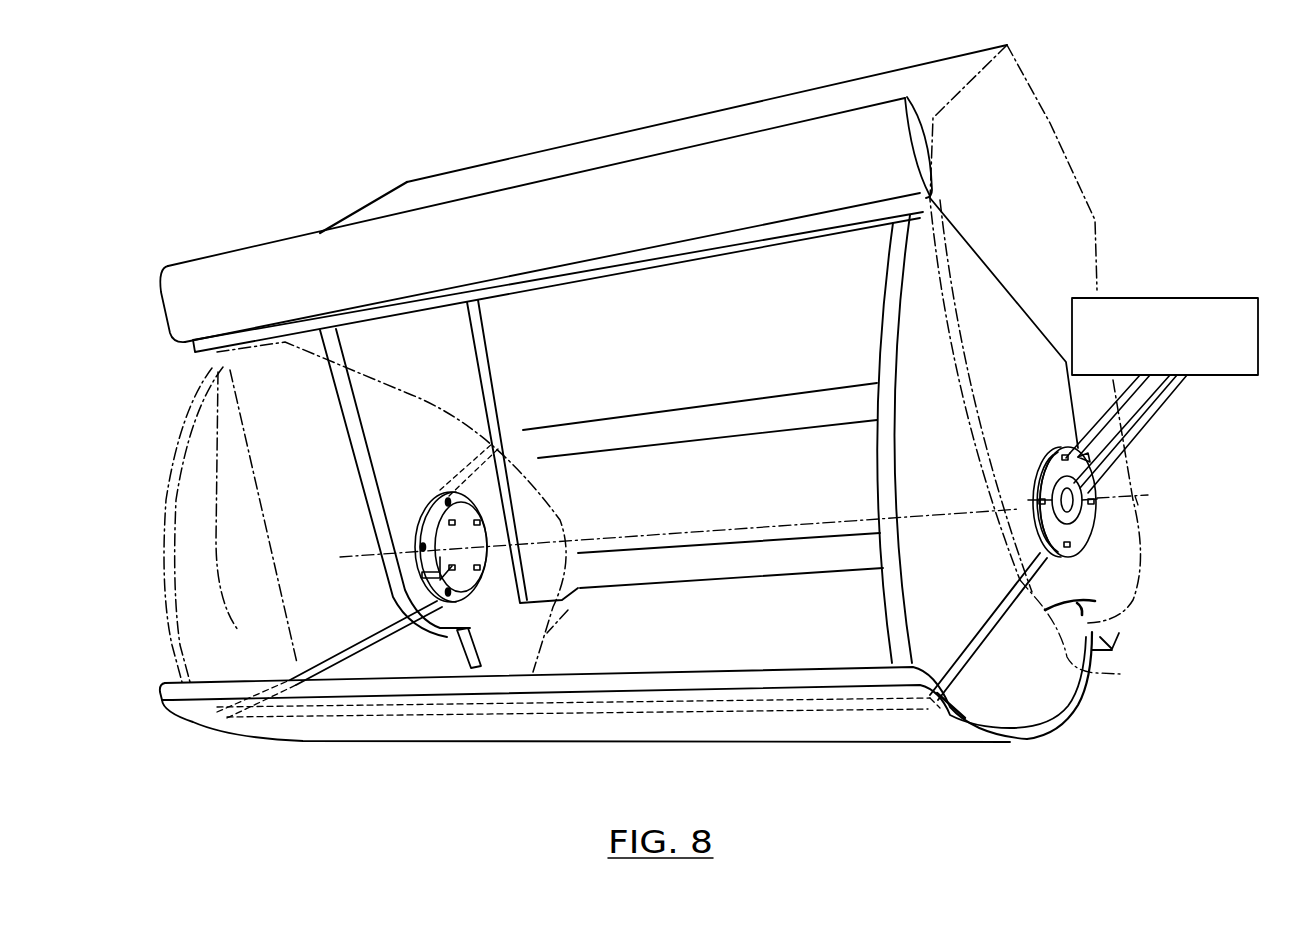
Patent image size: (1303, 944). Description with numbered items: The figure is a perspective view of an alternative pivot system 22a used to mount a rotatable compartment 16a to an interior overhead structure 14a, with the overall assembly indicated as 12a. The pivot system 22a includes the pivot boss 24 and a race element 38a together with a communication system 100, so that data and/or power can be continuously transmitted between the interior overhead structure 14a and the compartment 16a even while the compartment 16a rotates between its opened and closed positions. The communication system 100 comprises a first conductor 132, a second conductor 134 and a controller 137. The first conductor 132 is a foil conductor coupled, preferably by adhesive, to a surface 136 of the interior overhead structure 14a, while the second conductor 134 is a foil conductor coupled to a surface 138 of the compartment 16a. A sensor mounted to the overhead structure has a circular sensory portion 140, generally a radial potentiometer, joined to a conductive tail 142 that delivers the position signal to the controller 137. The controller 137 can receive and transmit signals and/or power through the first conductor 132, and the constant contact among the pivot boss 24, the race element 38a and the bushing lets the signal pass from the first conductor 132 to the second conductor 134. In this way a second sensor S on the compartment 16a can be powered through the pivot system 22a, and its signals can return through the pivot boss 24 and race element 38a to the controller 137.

The rotary implement / drum assembly (phantom) 12a is at (729, 790).
The interior overhead structure 14a is at (846, 76).
The compartment 16a is at (833, 748).
The alternative pivot system 22a is at (443, 607).
The pivot boss 24 is at (490, 527).
The race element 38a is at (466, 601).
The communication system 100 is at (1184, 401).
The first conductor 132 is at (1103, 413).
The second conductor 134 is at (977, 653).
The surface of the interior overhead structure 136 is at (487, 643).
The controller 137 is at (1177, 298).
The surface of the compartment 138 is at (1027, 678).
The circular sensory portion 140 is at (1070, 517).
The conductive tail 142 is at (1140, 426).
The second sensor S is at (787, 712).